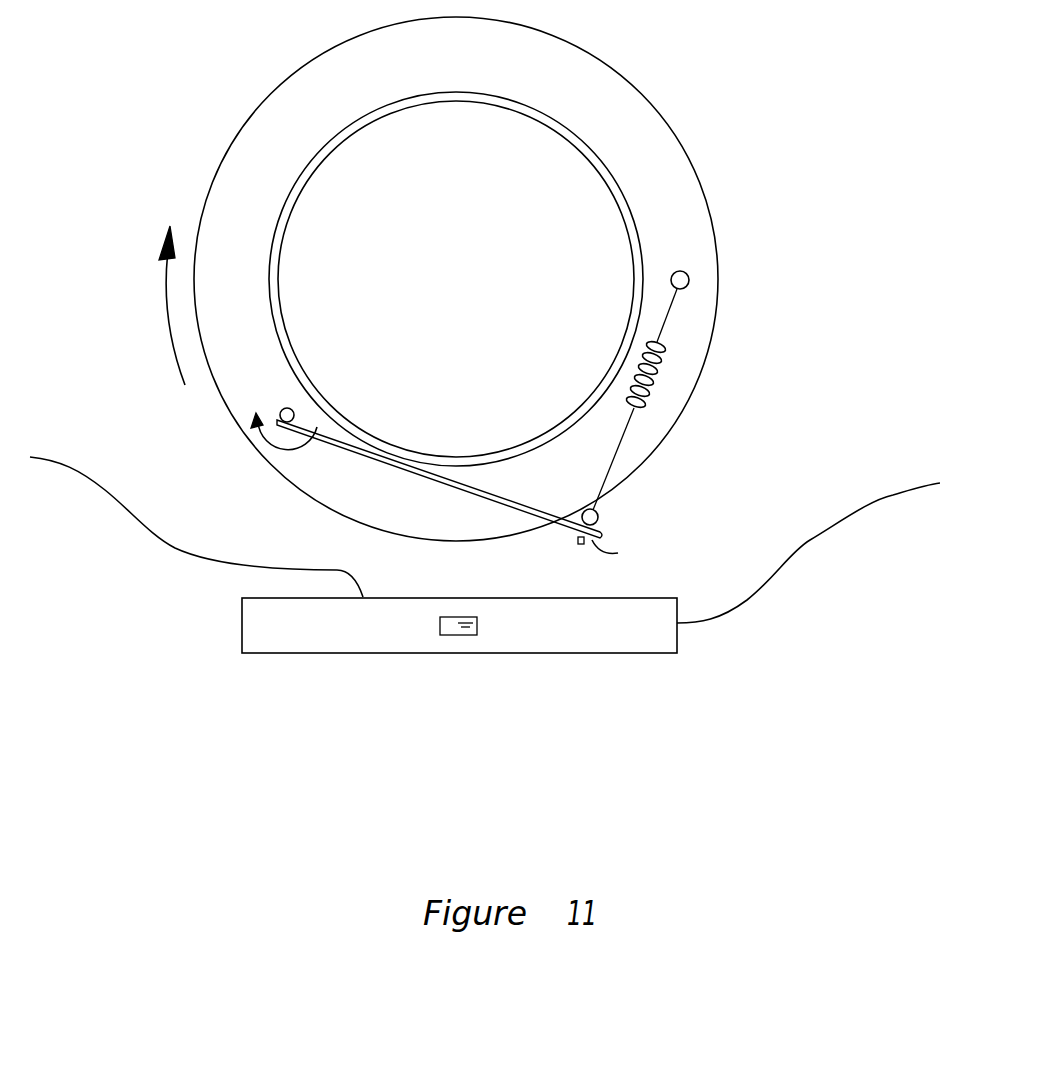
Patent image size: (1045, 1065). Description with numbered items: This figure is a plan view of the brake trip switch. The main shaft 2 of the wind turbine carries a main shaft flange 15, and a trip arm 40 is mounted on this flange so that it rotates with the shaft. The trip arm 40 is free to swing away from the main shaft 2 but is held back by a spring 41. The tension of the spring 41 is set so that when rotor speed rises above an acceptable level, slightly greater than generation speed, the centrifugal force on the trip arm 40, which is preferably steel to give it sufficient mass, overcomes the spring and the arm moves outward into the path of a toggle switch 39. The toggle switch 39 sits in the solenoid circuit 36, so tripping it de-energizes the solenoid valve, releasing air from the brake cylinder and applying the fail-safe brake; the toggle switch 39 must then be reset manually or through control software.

The main shaft 2 is at (560, 118).
The main shaft flange 15 is at (227, 152).
The solenoid circuit 36 is at (165, 545).
The toggle switch 39 is at (463, 635).
The trip arm 40 is at (457, 488).
The spring 41 is at (652, 383).